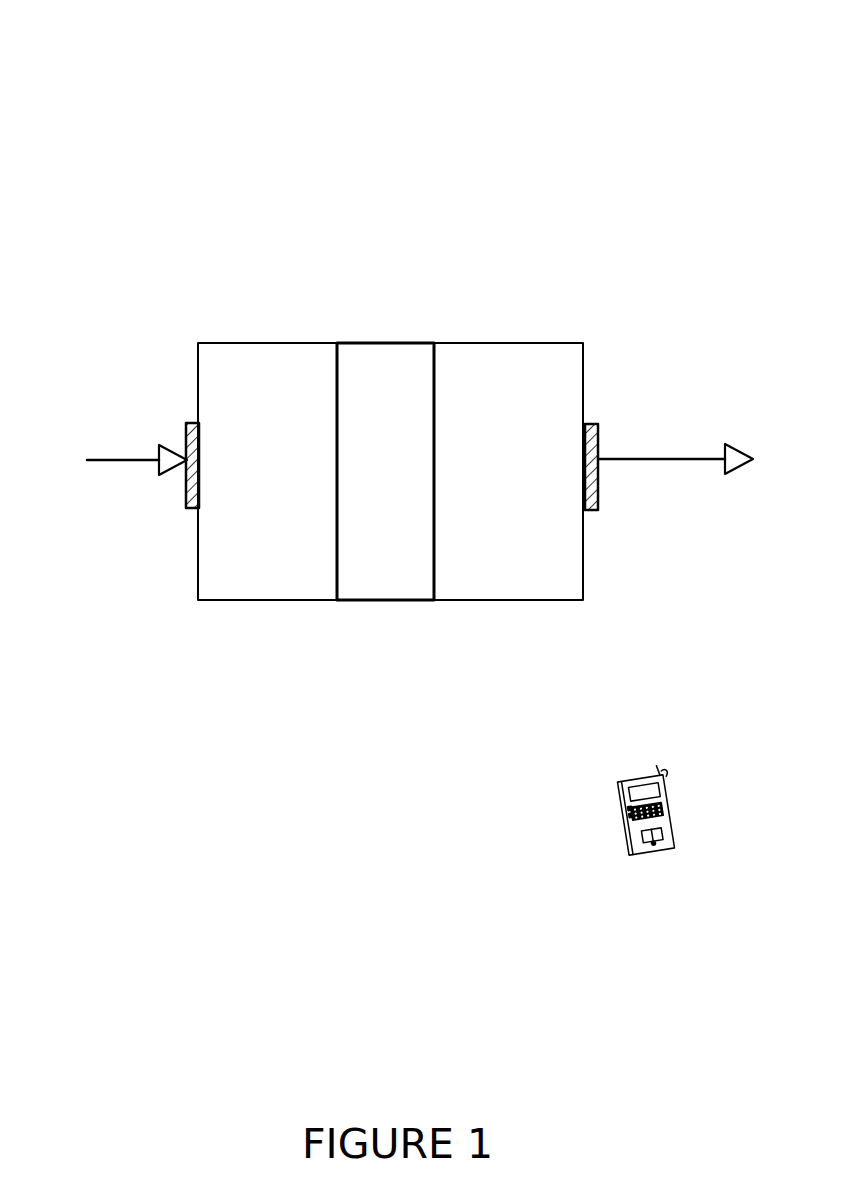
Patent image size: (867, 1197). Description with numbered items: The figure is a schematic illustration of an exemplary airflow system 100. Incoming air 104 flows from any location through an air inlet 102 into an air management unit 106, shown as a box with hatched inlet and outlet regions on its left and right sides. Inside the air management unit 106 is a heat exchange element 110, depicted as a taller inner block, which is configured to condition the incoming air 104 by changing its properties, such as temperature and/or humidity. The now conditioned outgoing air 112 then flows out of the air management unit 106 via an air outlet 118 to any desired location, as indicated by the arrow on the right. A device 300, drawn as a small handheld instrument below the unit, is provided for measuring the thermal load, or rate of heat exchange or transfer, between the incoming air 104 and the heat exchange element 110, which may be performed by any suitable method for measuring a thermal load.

The airflow system 100 is at (199, 100).
The air inlet 102 is at (193, 422).
The incoming air 104 is at (112, 458).
The air management unit 106 is at (287, 600).
The heat exchange element 110 is at (397, 342).
The outgoing air 112 is at (677, 458).
The air outlet 118 is at (598, 495).
The device 300 is at (623, 822).